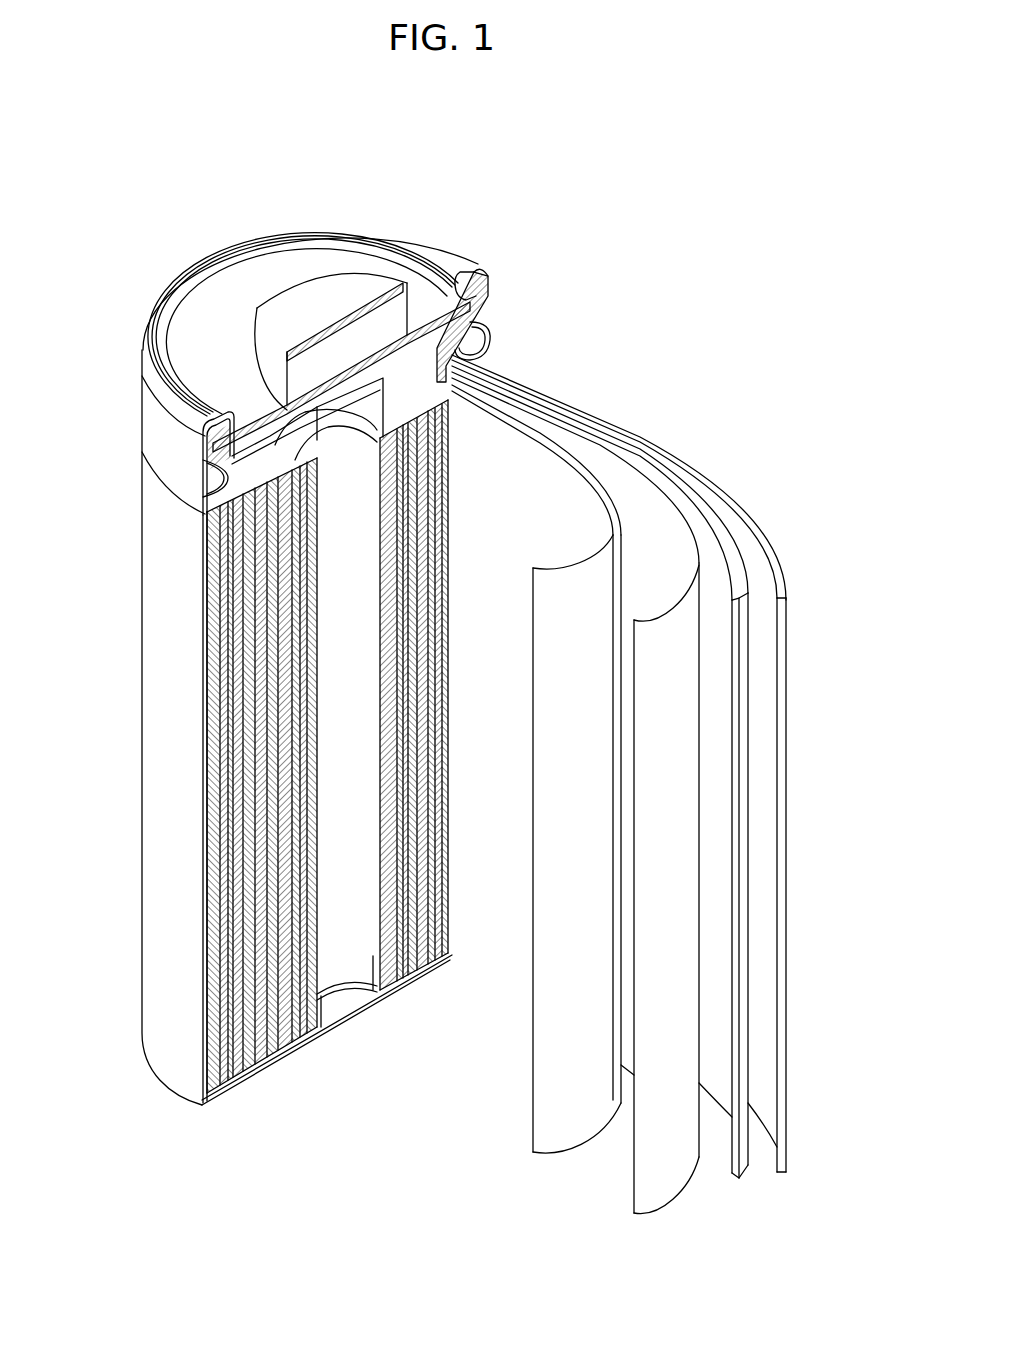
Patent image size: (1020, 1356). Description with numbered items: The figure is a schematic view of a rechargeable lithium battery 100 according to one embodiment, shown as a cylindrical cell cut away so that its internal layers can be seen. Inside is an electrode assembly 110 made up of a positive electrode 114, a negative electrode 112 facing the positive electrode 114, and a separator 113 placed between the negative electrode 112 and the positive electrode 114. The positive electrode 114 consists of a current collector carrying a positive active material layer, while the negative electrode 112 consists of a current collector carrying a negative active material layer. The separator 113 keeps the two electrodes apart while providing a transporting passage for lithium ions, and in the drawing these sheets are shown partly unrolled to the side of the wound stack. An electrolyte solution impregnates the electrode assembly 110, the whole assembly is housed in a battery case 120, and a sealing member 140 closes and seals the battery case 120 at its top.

The rechargeable lithium battery 100 is at (548, 239).
The electrode assembly 110 is at (327, 746).
The negative electrode 112 is at (750, 528).
The separator 113 is at (560, 444).
The positive electrode 114 is at (628, 487).
The battery case 120 is at (147, 617).
The sealing member 140 is at (315, 292).